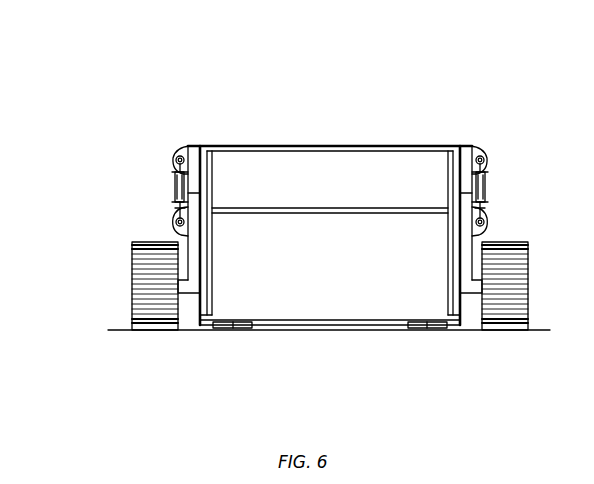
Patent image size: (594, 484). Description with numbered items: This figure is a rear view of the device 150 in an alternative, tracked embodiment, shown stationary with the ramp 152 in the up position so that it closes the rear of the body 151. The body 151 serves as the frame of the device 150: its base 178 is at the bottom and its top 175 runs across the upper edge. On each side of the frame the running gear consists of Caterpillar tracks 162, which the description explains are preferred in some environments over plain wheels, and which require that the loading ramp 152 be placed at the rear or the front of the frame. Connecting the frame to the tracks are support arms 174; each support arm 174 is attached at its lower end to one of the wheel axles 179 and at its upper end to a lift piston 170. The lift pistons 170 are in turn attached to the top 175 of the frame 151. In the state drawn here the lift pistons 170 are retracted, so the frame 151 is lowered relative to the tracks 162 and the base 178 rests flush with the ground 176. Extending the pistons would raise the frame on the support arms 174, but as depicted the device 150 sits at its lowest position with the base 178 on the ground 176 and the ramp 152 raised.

The device 150 is at (230, 93).
The body 151 is at (201, 146).
The ramp 152 is at (312, 163).
The top 175 is at (397, 146).
The lift pistons 170 is at (175, 172).
The support arms 174 is at (173, 230).
The Caterpillar tracks 162 is at (147, 315).
The wheel axles 179 is at (186, 294).
The ground 176 is at (282, 331).
The base 178 is at (343, 322).